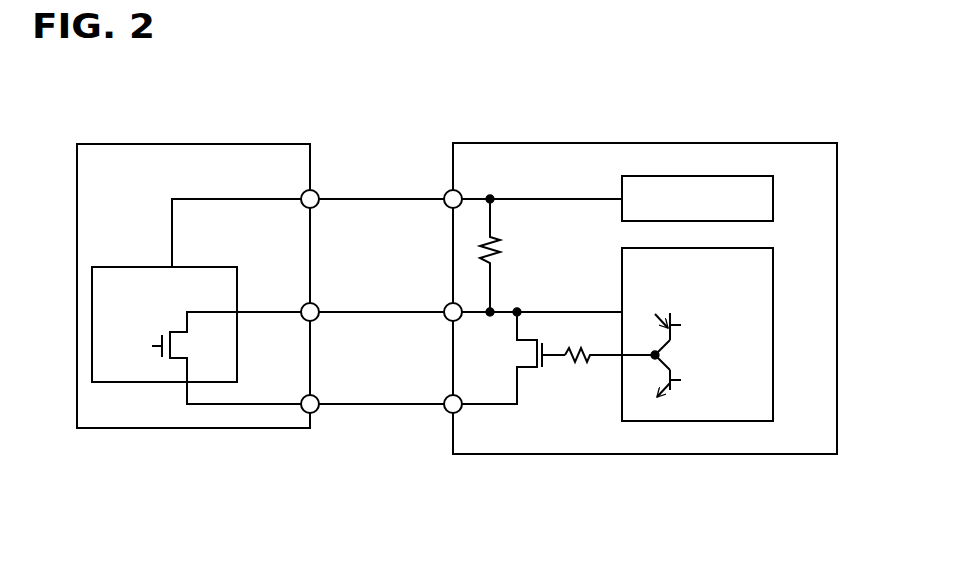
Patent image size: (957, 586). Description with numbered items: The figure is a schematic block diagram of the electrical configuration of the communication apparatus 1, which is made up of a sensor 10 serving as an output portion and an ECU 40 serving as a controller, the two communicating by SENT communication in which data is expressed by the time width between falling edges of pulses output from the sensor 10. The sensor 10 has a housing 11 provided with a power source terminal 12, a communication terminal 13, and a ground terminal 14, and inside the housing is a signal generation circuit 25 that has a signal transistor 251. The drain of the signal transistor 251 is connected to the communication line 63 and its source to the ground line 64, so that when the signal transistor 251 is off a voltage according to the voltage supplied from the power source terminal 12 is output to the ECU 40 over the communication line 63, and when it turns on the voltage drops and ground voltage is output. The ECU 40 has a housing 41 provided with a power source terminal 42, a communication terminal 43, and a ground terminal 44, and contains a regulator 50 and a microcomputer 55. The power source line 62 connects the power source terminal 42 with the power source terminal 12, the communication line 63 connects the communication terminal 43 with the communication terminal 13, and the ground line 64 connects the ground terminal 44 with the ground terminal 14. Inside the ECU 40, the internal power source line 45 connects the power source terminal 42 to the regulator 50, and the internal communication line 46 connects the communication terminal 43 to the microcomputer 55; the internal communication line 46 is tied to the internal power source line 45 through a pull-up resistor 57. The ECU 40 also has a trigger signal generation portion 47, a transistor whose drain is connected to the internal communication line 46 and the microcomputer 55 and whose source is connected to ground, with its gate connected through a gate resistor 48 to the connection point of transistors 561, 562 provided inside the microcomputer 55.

The communication apparatus 1 is at (147, 479).
The sensor 10 is at (97, 139).
The housing 11 is at (151, 143).
The power source terminal 12 is at (317, 192).
The communication terminal 13 is at (317, 305).
The ground terminal 14 is at (317, 397).
The signal generation circuit 25 is at (133, 266).
The signal transistor 251 is at (160, 351).
The ECU 40 is at (741, 141).
The housing 41 is at (511, 142).
The power source terminal 42 is at (447, 192).
The communication terminal 43 is at (447, 305).
The ground terminal 44 is at (447, 397).
The internal power source line 45 is at (583, 197).
The internal communication line 46 is at (592, 310).
The trigger signal generation portion 47 is at (533, 348).
The gate resistor 48 is at (578, 366).
The regulator 50 is at (774, 190).
The microcomputer 55 is at (774, 272).
The pull-up resistor 57 is at (502, 246).
The transistor 561 is at (680, 320).
The transistor 562 is at (680, 387).
The power source line 62 is at (343, 197).
The communication line 63 is at (350, 314).
The ground line 64 is at (350, 406).